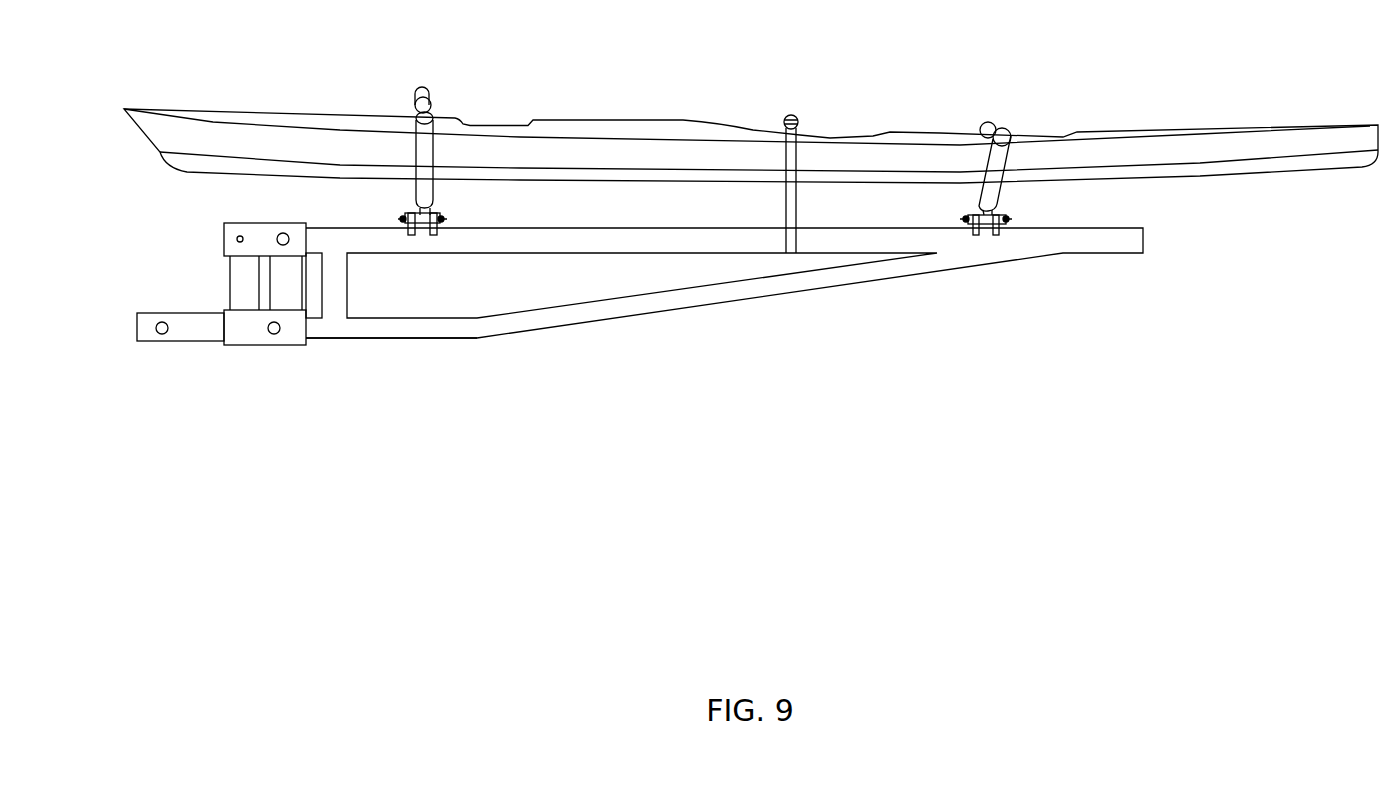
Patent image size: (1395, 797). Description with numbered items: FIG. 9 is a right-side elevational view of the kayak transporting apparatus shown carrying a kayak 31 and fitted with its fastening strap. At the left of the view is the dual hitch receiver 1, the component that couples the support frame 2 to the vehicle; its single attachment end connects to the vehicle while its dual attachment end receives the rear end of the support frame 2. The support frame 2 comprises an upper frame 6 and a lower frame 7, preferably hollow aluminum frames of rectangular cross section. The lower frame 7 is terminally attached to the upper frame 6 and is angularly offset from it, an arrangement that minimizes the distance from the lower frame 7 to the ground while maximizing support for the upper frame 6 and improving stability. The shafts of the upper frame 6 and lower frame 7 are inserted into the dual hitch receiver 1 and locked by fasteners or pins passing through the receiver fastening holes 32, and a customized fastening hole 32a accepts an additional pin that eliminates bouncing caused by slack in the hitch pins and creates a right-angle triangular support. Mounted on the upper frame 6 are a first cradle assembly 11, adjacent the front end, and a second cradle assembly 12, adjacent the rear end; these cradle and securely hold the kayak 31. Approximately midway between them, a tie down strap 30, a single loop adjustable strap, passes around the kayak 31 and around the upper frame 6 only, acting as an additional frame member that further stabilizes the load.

The dual hitch receiver 1 is at (185, 333).
The support frame 2 is at (724, 336).
The upper frame 6 is at (825, 242).
The lower frame 7 is at (445, 328).
The first cradle assembly 11 is at (1010, 202).
The second cradle assembly 12 is at (447, 200).
The tie down strap 30 is at (790, 115).
The kayak 31 is at (935, 137).
The receiver fastening holes 32 is at (260, 308).
The customized fastening hole 32a is at (205, 273).